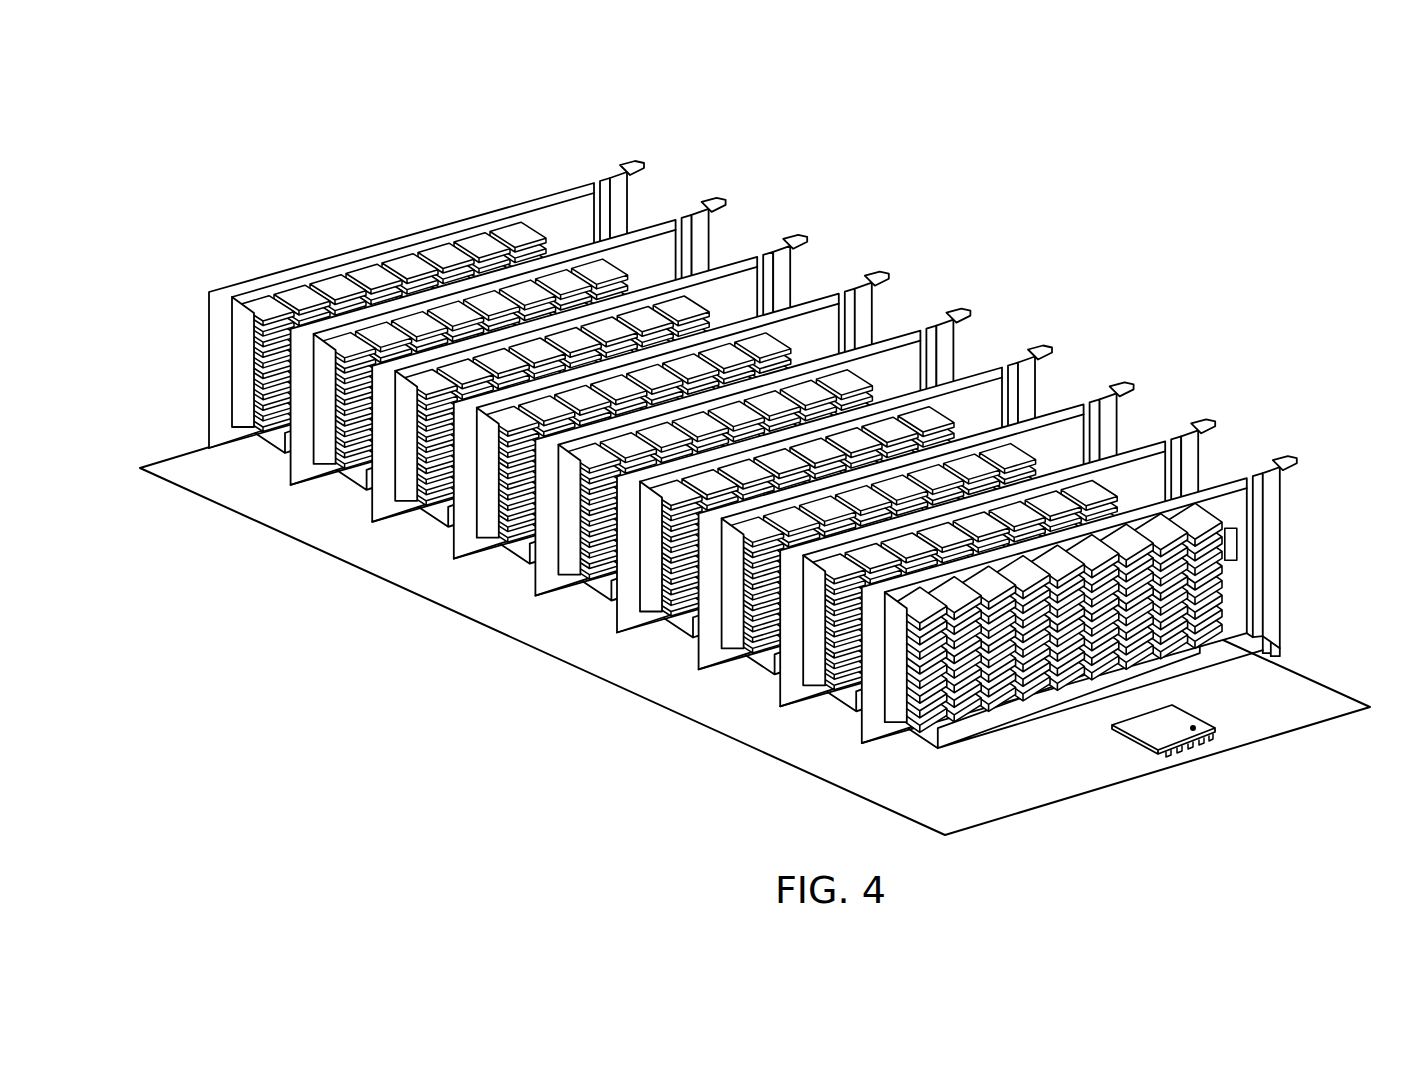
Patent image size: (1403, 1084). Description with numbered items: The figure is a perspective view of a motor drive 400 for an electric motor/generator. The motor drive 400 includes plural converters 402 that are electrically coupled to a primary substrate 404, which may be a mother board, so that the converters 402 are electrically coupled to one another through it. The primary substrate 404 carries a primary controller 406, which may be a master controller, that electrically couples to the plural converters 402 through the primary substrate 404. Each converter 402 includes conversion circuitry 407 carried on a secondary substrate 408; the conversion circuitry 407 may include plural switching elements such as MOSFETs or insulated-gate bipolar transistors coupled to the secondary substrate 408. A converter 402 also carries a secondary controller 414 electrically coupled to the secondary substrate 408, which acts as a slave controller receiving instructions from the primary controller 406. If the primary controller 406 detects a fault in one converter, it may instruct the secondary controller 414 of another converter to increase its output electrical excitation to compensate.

The motor drive 400 is at (1040, 195).
The converter 402 is at (738, 451).
The primary substrate 404 is at (1343, 700).
The primary controller 406 is at (1190, 744).
The conversion circuitry 407 is at (395, 492).
The secondary substrate 408 is at (1103, 430).
The secondary controller 414 is at (1180, 590).